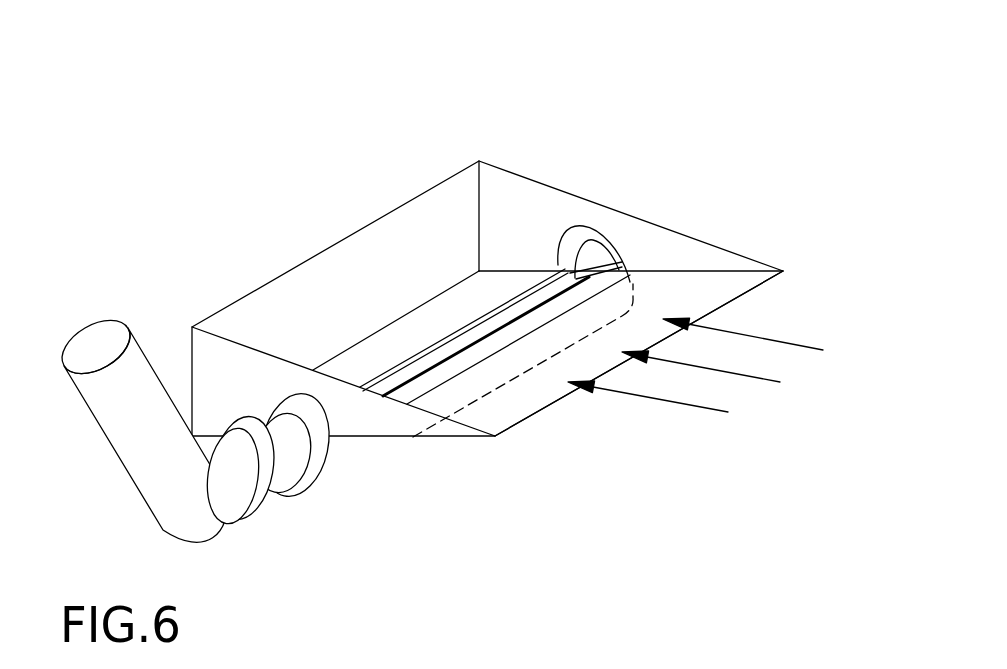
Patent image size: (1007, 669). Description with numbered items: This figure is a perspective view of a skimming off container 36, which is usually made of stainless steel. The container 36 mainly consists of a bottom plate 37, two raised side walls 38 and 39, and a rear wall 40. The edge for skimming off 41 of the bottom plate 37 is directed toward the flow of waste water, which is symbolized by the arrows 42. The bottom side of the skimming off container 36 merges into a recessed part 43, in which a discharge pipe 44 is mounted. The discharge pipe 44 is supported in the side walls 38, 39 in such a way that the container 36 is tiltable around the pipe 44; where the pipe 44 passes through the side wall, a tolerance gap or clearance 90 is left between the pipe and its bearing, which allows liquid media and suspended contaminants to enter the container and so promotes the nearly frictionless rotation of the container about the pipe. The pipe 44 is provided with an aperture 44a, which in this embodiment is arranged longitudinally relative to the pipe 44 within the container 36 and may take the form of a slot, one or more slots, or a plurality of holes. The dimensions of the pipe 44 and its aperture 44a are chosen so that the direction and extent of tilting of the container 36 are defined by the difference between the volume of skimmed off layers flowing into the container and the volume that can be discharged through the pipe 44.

The skimming off container 36 is at (578, 93).
The bottom plate 37 is at (712, 293).
The raised side wall 38 is at (667, 258).
The raised side wall 39 is at (213, 365).
The rear wall 40 is at (328, 277).
The edge for skimming off 41 is at (508, 400).
The arrows 42 is at (722, 384).
The recessed part 43 is at (340, 450).
The discharge pipe 44 is at (127, 417).
The aperture 44a is at (557, 288).
The tolerance gap or clearance 90 is at (588, 282).